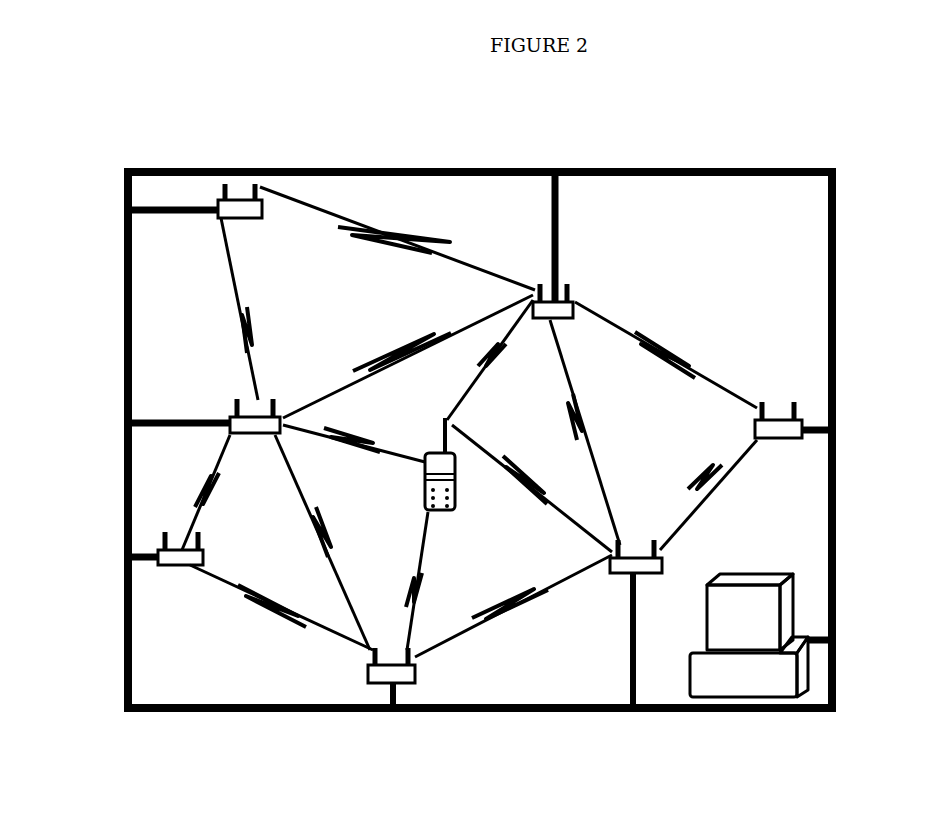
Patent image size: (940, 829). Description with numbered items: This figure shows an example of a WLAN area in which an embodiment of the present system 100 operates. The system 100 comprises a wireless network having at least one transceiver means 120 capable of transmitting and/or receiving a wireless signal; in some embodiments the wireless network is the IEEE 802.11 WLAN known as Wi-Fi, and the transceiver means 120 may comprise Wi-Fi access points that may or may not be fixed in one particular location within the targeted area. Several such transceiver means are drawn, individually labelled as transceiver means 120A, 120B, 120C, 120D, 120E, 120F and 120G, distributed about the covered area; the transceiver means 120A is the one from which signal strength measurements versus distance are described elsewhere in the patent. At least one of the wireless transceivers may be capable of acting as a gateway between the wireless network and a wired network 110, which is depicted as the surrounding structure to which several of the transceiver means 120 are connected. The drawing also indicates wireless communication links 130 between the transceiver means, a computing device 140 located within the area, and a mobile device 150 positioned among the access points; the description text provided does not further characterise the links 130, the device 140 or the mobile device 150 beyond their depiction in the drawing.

The system 100 is at (530, 459).
The wired network 110 is at (493, 167).
The transceiver means 120 is at (545, 444).
The transceiver means 120A is at (365, 672).
The wireless access point 120B is at (635, 553).
The wireless access point 120C is at (210, 550).
The wireless access point 120D is at (780, 415).
The wireless access point 120E is at (578, 312).
The wireless access point 120F is at (225, 412).
The wireless access point 120G is at (250, 222).
The wireless communication links 130 is at (510, 614).
The computer / server 140 is at (737, 572).
The mobile device 150 is at (460, 485).